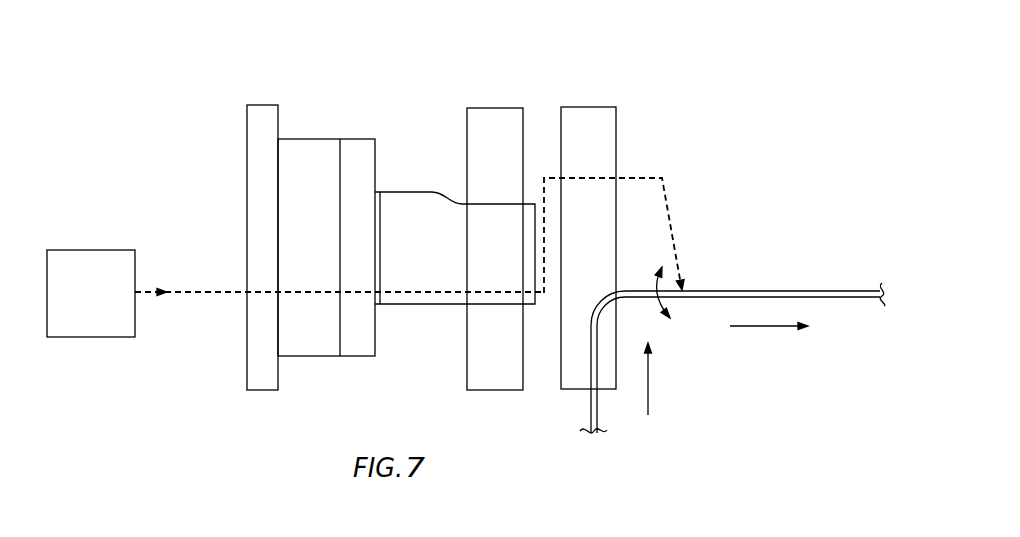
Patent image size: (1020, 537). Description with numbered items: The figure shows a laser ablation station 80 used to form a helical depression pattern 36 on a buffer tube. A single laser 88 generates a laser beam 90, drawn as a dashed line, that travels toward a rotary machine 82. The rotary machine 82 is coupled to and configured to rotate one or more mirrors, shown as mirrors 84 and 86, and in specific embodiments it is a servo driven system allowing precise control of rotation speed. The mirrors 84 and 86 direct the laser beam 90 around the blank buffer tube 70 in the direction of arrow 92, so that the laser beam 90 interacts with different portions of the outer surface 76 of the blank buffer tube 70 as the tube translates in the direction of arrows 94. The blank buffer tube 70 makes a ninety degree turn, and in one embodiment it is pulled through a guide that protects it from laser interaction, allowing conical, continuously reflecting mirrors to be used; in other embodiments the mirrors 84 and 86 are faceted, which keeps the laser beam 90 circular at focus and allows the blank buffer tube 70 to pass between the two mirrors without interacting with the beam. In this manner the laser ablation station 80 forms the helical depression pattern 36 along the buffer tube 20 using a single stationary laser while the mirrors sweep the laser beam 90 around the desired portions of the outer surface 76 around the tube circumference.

The strip 20 is at (827, 290).
The helical depression pattern 36 is at (749, 275).
The blank buffer tube 70 is at (590, 410).
The outer surface 76 is at (602, 400).
The laser ablation station 80 is at (679, 84).
The rotary machine 82 is at (357, 158).
The mirror 84 is at (490, 125).
The mirror 86 is at (586, 125).
The laser 88 is at (95, 250).
The laser beam 90 is at (183, 296).
The arrow 92 is at (652, 290).
The arrows 94 is at (651, 382).